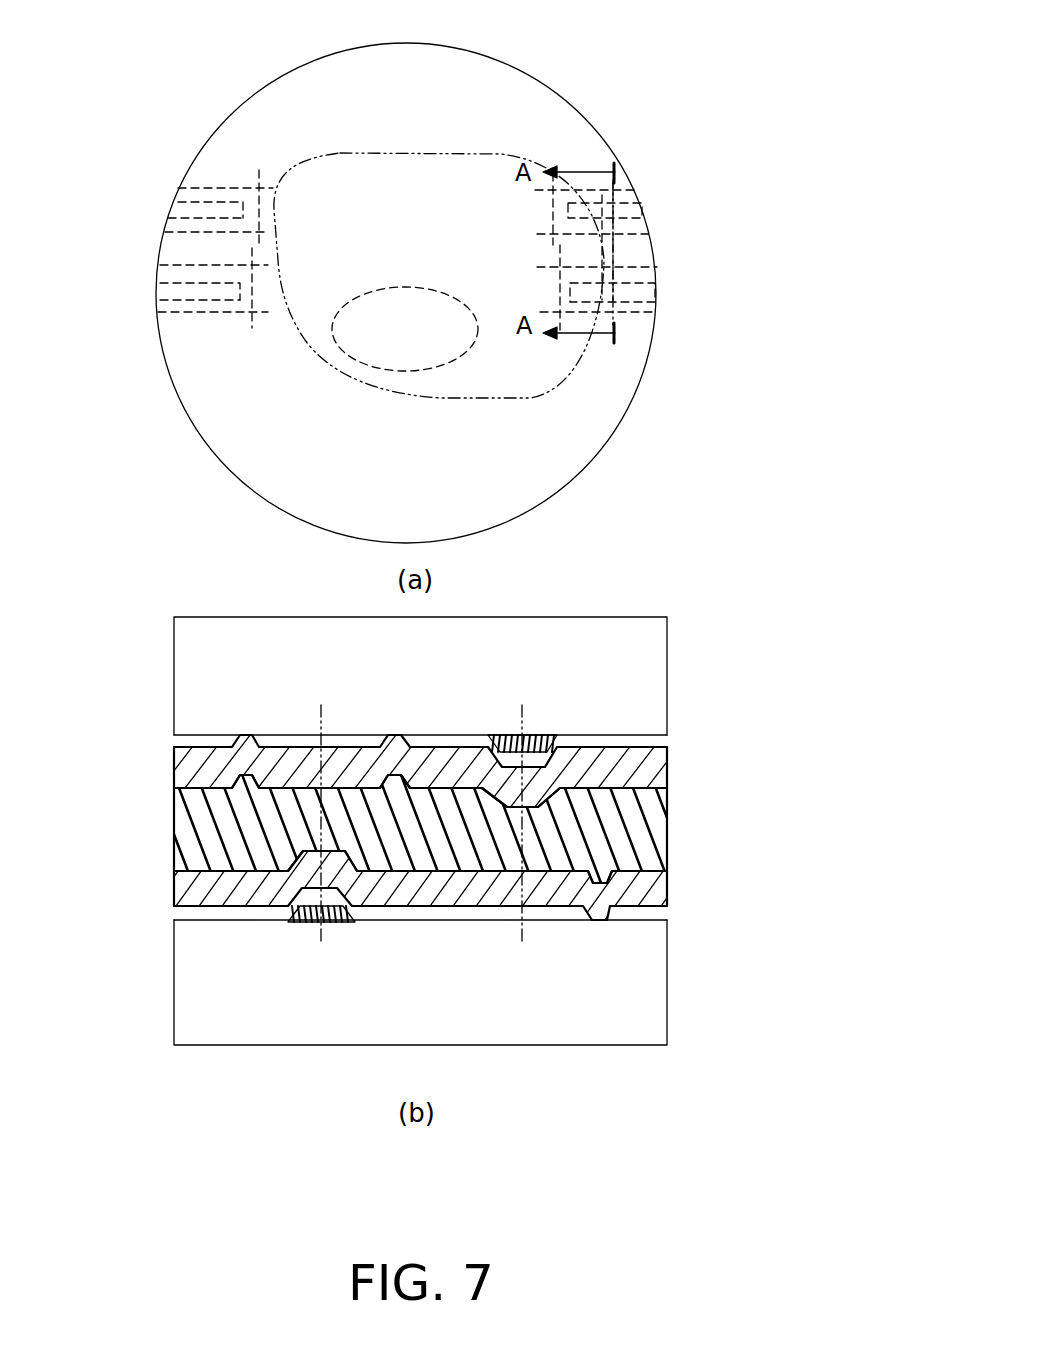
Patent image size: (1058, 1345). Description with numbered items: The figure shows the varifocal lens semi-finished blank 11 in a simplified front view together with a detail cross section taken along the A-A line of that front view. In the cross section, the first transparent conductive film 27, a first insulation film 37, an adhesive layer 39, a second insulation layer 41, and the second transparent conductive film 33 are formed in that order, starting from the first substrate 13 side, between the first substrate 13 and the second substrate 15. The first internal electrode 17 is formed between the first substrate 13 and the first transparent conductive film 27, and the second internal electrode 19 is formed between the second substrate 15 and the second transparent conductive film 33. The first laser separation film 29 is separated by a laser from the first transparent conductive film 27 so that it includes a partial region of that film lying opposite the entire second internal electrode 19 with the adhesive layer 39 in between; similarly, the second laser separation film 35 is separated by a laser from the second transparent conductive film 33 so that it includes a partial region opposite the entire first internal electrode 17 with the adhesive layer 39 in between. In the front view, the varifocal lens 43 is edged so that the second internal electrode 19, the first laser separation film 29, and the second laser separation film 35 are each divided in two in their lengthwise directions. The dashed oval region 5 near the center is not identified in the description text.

The varifocal lens semi-finished blank 11 is at (593, 70).
The varifocal lens 43 is at (327, 158).
The opening 5 is at (333, 325).
The first laser separation film 29 is at (620, 192).
The second internal electrode 19 is at (620, 207).
The second laser separation film 35 is at (643, 273).
The first internal electrode 17 is at (643, 302).
The second substrate 15 is at (185, 675).
The first substrate 13 is at (173, 993).
The second transparent conductive film 33 is at (668, 740).
The second insulation layer 41 is at (668, 770).
The adhesive layer 39 is at (668, 833).
The first insulation film 37 is at (668, 890).
The first transparent conductive film 27 is at (668, 912).